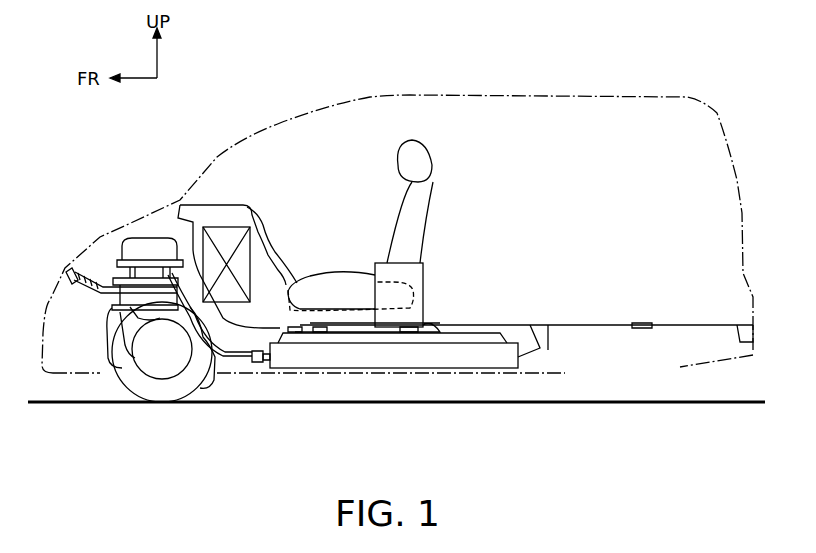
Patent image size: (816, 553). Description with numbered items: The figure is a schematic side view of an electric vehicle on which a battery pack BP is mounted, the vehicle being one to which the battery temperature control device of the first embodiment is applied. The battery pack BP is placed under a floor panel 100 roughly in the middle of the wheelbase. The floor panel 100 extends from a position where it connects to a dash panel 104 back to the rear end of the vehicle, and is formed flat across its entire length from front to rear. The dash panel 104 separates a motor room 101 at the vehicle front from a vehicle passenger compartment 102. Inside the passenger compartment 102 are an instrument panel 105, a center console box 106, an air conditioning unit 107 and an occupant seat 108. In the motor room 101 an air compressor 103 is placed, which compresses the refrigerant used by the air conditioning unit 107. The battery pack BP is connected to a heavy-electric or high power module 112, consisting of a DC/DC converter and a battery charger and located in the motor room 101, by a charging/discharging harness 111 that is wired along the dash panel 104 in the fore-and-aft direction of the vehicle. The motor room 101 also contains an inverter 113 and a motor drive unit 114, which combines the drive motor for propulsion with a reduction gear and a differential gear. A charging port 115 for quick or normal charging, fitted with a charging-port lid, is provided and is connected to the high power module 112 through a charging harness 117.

The floor panel 100 is at (512, 323).
The motor room 101 is at (92, 366).
The vehicle passenger compartment 102 is at (361, 179).
The air compressor 103 is at (130, 330).
The dash panel 104 is at (217, 227).
The instrument panel 105 is at (262, 207).
The center console box 106 is at (332, 300).
The air conditioning unit 107 is at (252, 267).
The occupant seat 108 is at (435, 205).
The charging/discharging harness 111 is at (217, 363).
The high power module 112 is at (137, 237).
The inverter 113 is at (148, 273).
The motor drive unit 114 is at (123, 358).
The charging port 115 is at (68, 272).
The charging harness 117 is at (100, 280).
The battery pack BP is at (402, 370).